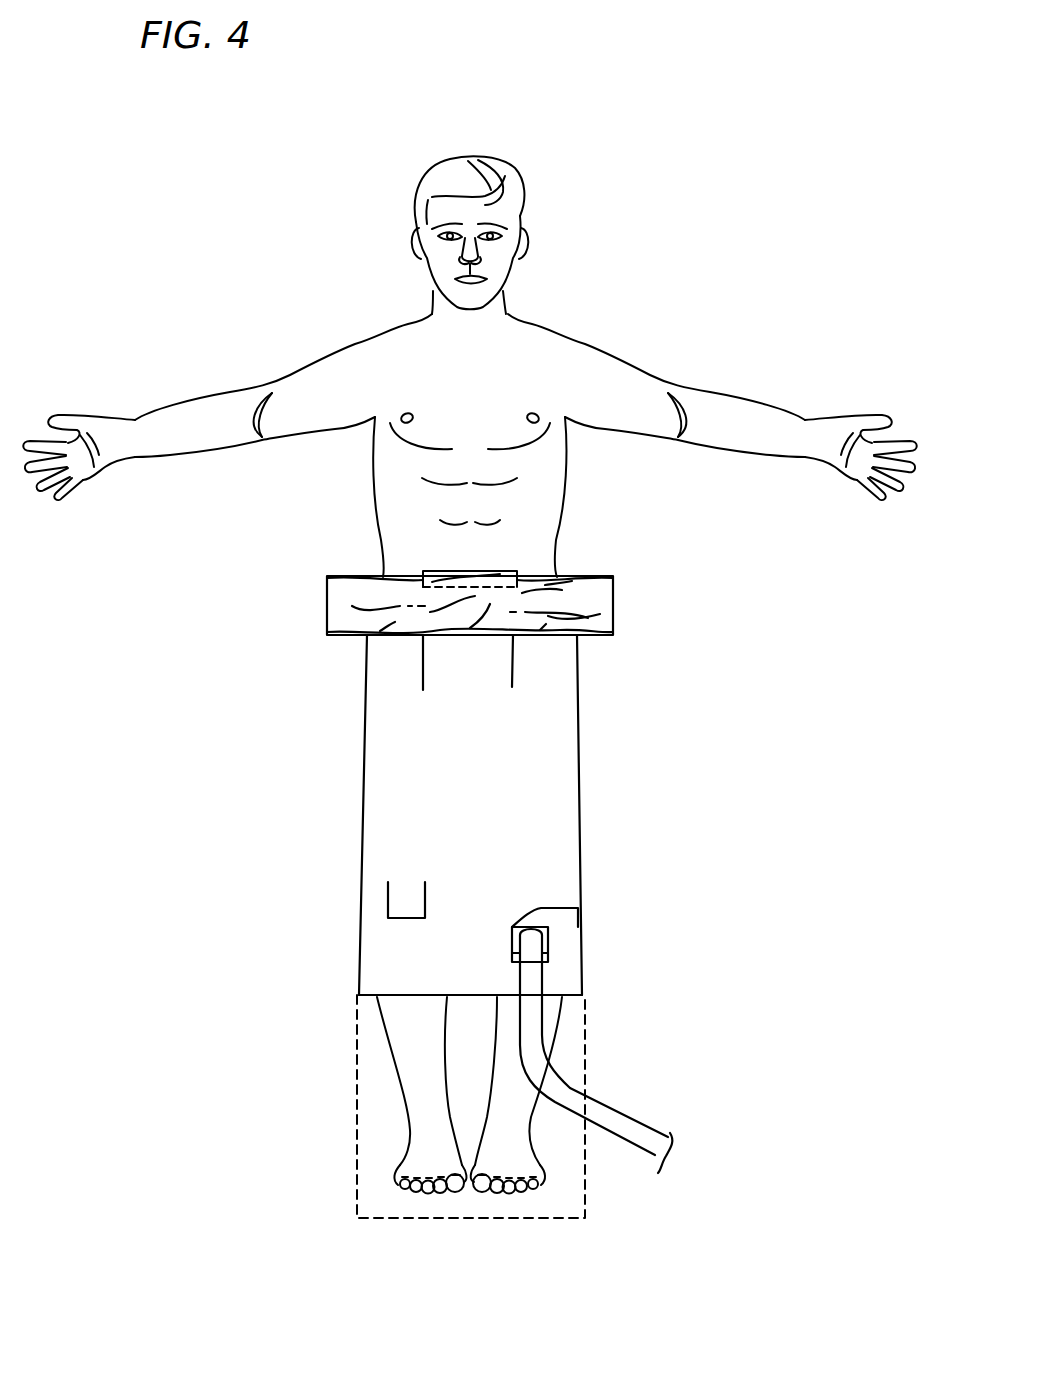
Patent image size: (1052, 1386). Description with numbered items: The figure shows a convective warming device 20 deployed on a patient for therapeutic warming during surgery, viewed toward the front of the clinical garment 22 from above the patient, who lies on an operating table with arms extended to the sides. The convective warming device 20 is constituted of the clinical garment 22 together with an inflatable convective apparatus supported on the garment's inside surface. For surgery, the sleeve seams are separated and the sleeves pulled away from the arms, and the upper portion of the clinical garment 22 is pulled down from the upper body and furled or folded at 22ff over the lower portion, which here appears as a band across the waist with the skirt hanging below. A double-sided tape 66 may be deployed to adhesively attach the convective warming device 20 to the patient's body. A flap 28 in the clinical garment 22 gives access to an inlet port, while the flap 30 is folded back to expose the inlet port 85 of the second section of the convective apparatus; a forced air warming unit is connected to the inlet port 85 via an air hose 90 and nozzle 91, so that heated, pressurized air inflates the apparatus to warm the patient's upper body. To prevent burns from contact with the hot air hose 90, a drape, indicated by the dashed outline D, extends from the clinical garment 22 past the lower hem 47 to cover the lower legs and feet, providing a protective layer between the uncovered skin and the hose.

The convective warming device 20 is at (596, 768).
The clinical garment 22 is at (652, 947).
The furled portion of the clinical garment 22ff is at (593, 606).
The double-sided tape 66 is at (502, 573).
The flap 28 is at (388, 898).
The flap 30 is at (562, 921).
The nozzle 91 is at (512, 950).
The inlet port 85 is at (549, 953).
The air hose 90 is at (637, 1117).
The lower hem 47 is at (420, 997).
The drape D is at (357, 1092).